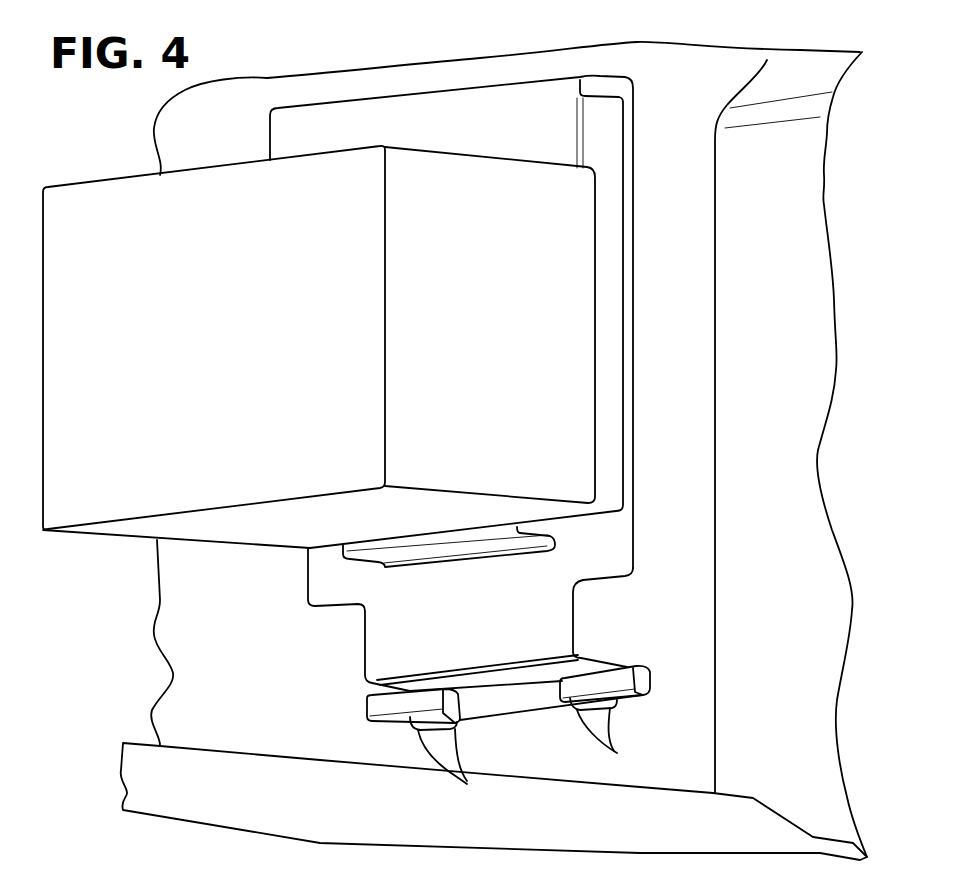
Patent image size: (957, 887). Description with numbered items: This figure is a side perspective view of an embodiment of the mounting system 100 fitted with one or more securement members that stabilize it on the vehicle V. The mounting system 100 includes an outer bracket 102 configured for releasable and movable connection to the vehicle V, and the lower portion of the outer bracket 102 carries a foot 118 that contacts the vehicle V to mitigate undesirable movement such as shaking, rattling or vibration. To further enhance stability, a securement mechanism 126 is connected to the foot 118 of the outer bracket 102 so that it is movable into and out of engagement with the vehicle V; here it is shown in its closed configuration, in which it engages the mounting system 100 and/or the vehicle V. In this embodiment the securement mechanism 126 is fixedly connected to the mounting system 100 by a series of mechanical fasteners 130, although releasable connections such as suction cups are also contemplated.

The mounting system 100 is at (665, 80).
The outer bracket 102 is at (600, 541).
The foot 118 is at (673, 647).
The securement mechanism 126 is at (557, 686).
The mechanical fasteners 130 is at (533, 753).
The vehicle V is at (200, 598).